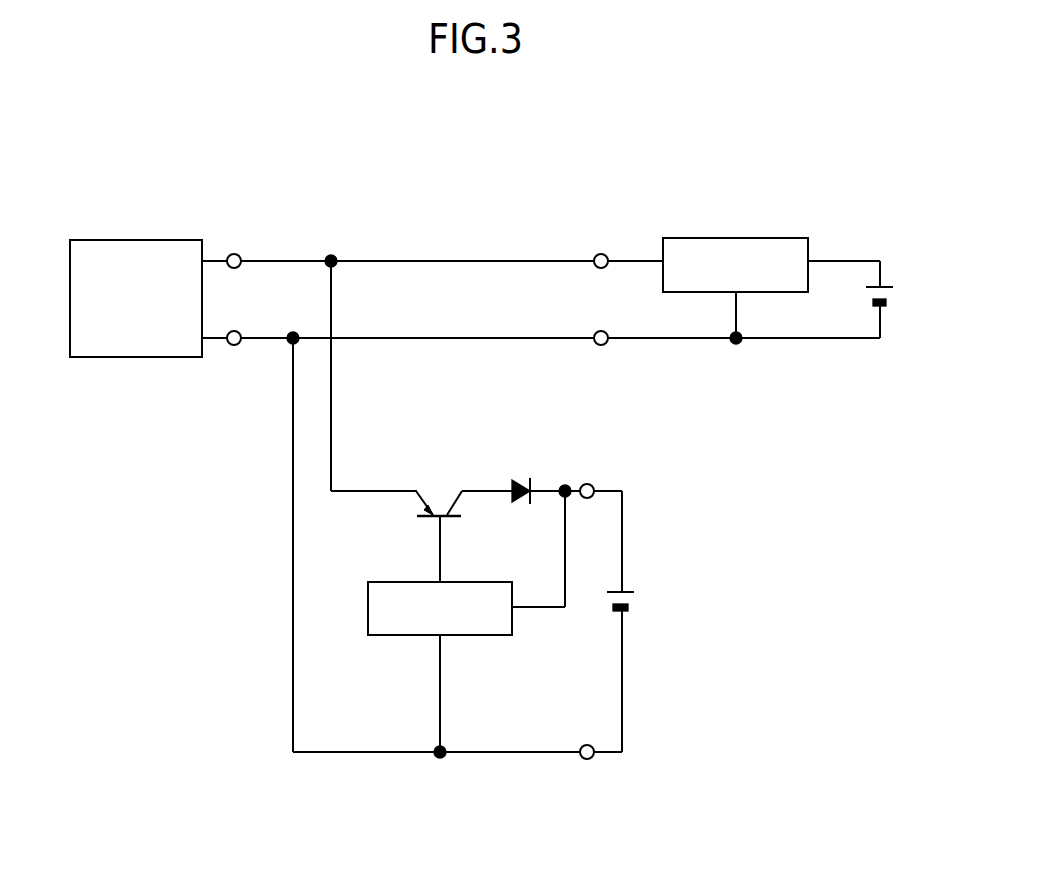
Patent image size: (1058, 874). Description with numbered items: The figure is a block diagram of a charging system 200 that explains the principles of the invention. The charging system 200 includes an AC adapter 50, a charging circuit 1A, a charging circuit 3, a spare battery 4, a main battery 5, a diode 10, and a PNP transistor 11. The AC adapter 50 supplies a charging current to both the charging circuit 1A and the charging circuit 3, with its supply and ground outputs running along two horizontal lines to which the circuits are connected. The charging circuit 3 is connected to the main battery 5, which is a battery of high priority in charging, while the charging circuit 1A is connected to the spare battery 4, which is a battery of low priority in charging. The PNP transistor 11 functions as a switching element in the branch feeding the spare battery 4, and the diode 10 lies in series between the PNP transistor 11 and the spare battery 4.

The charging system 200 is at (774, 108).
The AC adapter 50 is at (177, 240).
The charging circuit 3 is at (732, 238).
The main battery 5 is at (867, 289).
The PNP transistor 11 is at (426, 510).
The diode 10 is at (519, 479).
The charging circuit 1A is at (477, 582).
The spare battery 4 is at (634, 592).